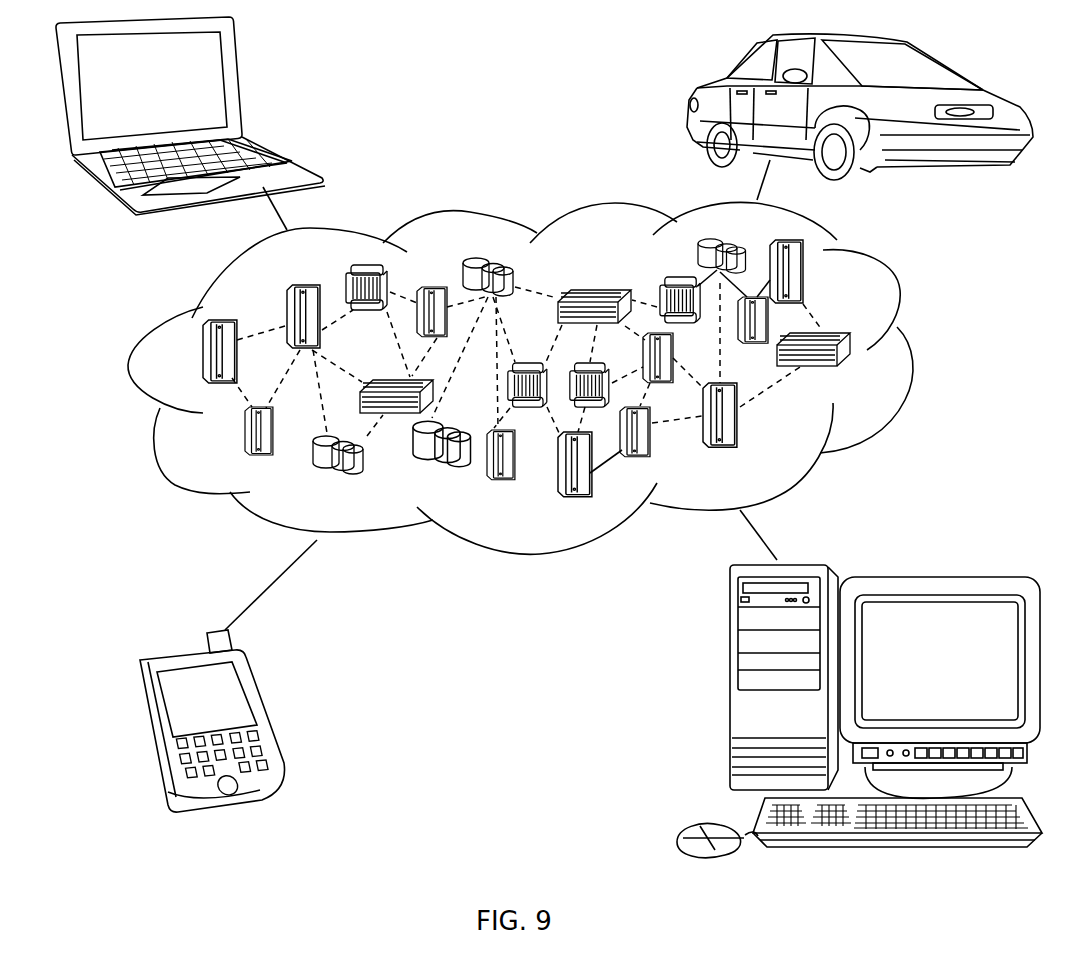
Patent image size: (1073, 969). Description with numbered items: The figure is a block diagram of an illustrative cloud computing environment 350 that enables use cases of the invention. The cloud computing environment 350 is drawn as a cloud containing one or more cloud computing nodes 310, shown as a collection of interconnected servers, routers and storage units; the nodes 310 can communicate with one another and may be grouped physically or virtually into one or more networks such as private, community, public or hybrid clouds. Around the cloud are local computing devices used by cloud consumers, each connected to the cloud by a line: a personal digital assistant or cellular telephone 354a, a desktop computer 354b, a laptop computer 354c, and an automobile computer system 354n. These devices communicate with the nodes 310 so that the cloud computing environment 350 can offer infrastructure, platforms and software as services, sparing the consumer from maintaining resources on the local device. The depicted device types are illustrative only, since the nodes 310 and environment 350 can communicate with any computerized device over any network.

The cloud computing environment 350 is at (900, 287).
The cloud computing nodes 310 is at (870, 373).
The personal digital assistant (PDA) or cellular telephone 354a is at (262, 697).
The desktop computer 354b is at (730, 693).
The laptop computer 354c is at (237, 75).
The automobile computer system 354n is at (700, 83).